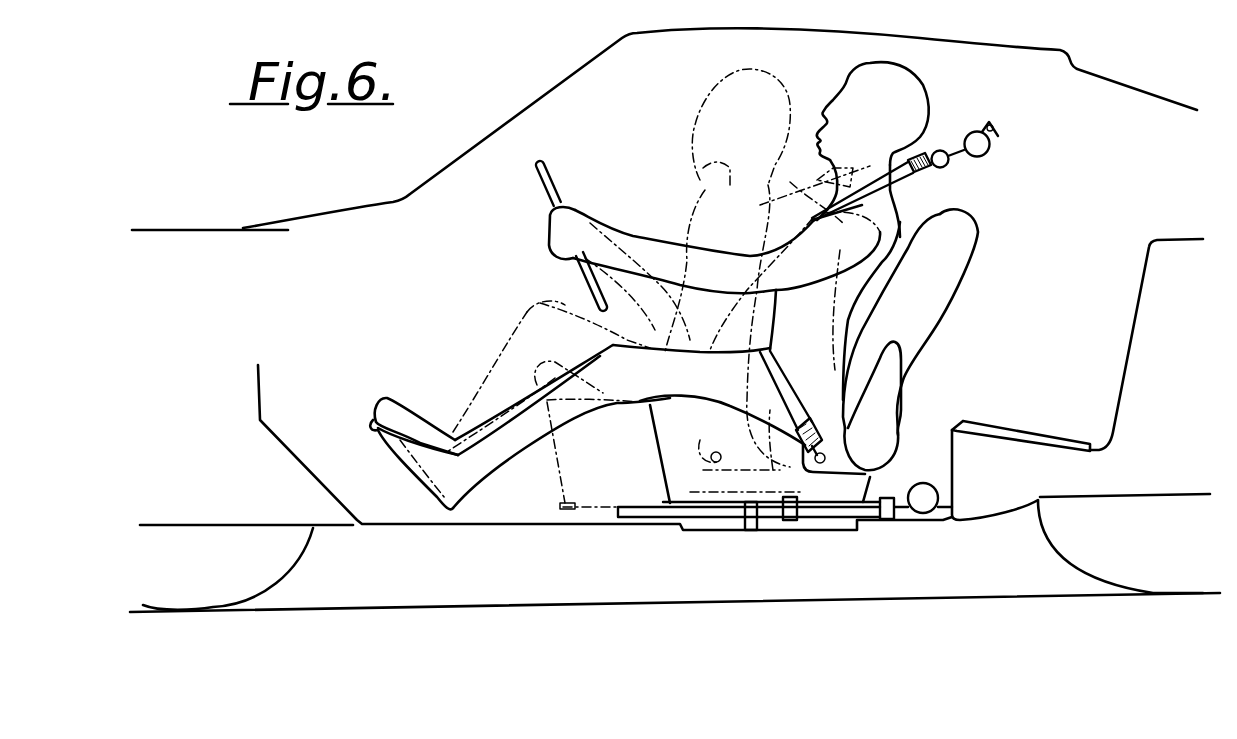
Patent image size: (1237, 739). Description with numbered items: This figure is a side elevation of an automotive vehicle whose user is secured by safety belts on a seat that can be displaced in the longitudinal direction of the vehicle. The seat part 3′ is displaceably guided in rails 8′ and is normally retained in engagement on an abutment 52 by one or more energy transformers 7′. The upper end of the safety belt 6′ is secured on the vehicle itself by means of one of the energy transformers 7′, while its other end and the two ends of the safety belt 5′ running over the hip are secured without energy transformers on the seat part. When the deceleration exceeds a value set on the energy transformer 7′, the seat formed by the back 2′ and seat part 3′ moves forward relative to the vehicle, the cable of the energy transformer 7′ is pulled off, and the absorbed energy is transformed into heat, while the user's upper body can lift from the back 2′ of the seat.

The back of the seat 2′ is at (930, 274).
The seat part 3′ is at (723, 487).
The safety belt running over the hip 5′ is at (791, 373).
The safety belt 6′ is at (903, 178).
The energy transformer 7′ is at (985, 147).
The rails 8′ is at (747, 522).
The abutment 52 is at (889, 520).